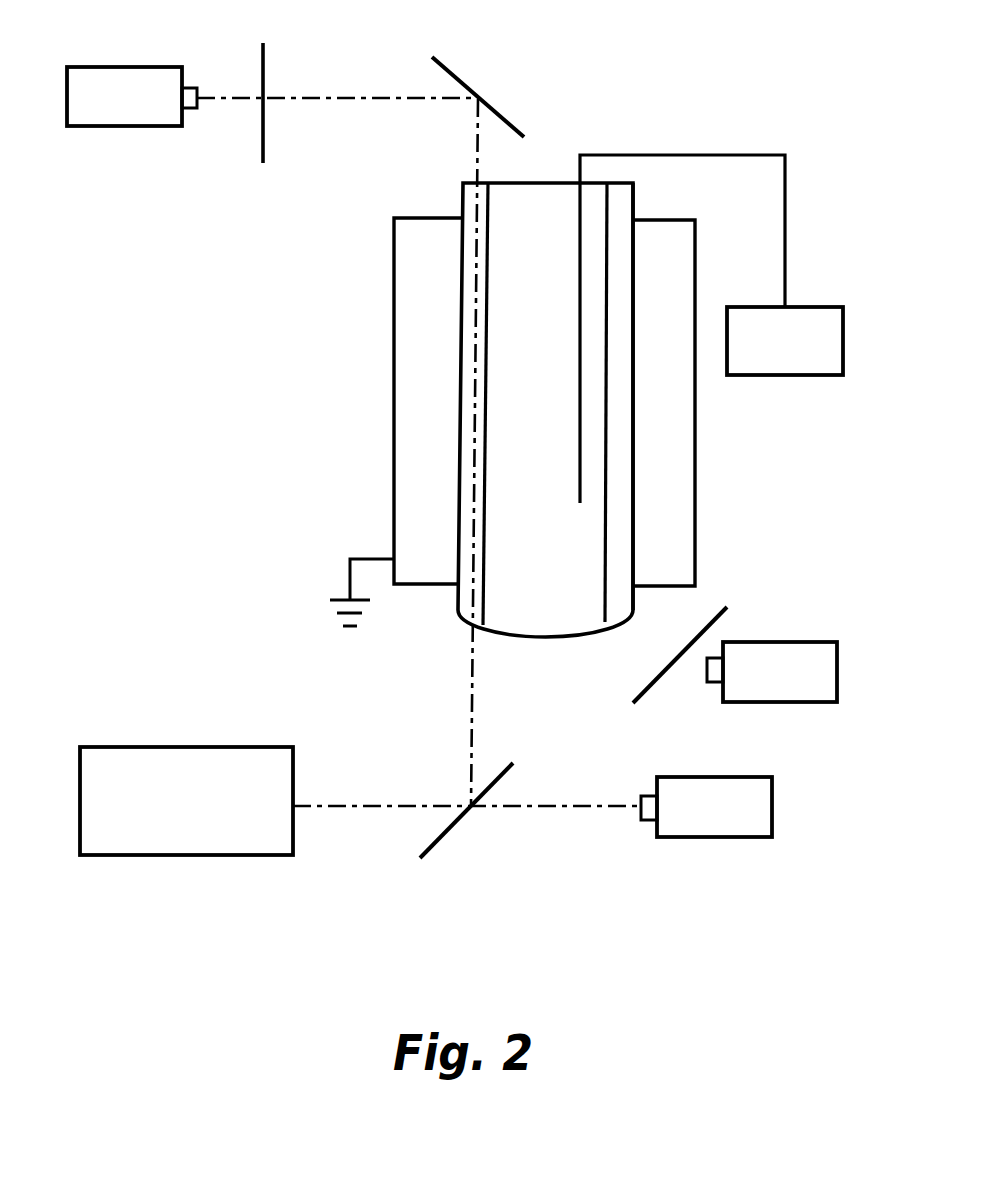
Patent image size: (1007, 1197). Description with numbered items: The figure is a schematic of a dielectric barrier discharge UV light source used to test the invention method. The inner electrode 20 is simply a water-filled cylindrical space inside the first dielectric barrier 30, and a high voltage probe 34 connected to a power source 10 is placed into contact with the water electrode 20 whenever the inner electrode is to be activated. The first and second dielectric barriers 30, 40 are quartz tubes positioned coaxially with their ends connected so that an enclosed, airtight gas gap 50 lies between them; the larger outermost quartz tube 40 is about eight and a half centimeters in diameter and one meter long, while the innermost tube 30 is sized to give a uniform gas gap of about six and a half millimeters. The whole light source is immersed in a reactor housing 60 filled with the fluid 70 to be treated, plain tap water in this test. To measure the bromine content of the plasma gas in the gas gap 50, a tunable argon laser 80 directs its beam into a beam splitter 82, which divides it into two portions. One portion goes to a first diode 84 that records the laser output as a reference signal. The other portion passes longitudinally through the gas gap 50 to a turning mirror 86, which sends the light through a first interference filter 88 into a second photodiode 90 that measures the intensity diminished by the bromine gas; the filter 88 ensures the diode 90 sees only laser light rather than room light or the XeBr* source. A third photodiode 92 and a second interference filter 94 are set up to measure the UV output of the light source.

The power source 10 is at (797, 307).
The inner electrode 20 is at (545, 410).
The first dielectric barrier 30 is at (603, 565).
The high voltage probe 34 is at (577, 383).
The second dielectric barrier 40 is at (630, 600).
The gas gap 50 is at (618, 293).
The reactor housing 60 is at (395, 282).
The fluid 70 is at (551, 403).
The tunable argon laser 80 is at (232, 747).
The beam splitter 82 is at (462, 820).
The first diode 84 is at (772, 798).
The turning mirror 86 is at (465, 82).
The first interference filter 88 is at (265, 85).
The second photodiode 90 is at (128, 67).
The third photodiode 92 is at (778, 642).
The second interference filter 94 is at (670, 662).